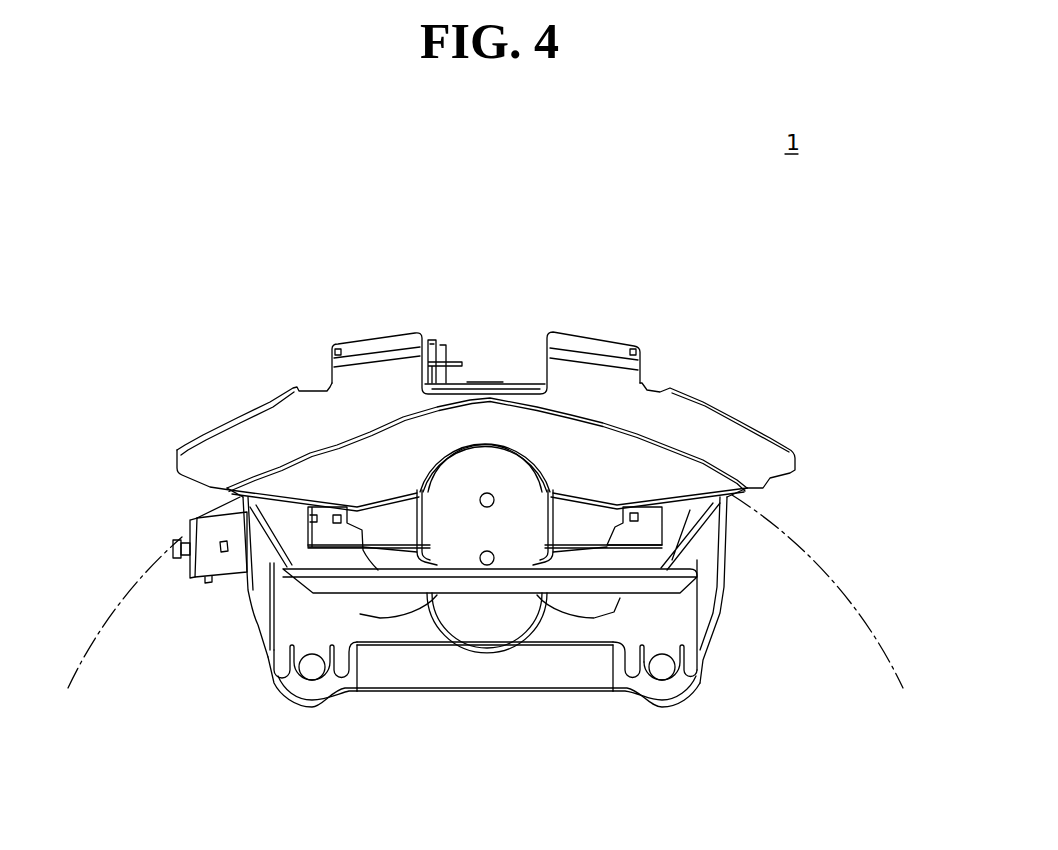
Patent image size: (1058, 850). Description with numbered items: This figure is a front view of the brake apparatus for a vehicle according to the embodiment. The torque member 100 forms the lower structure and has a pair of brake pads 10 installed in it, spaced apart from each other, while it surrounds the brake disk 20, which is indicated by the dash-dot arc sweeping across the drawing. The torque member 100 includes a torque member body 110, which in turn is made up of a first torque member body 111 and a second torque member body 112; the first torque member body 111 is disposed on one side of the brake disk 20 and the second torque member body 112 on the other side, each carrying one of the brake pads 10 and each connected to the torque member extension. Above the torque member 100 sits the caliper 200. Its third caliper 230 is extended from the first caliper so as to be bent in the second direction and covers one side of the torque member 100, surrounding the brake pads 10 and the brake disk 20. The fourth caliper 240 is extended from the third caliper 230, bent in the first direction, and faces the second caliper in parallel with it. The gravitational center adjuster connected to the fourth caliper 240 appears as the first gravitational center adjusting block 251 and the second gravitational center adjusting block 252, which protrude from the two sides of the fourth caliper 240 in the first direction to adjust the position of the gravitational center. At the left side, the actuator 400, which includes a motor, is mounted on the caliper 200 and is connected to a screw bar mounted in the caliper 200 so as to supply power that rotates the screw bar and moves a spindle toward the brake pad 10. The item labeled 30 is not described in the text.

The brake pads 10 is at (450, 537).
The brake disk 20 is at (847, 597).
The mounting bracket 30 is at (310, 547).
The torque member 100 is at (484, 711).
The torque member body 110 is at (484, 711).
The first torque member body 111 is at (608, 580).
The second torque member body 112 is at (668, 690).
The caliper 200 is at (479, 373).
The third caliper 230 is at (448, 378).
The fourth caliper 240 is at (500, 423).
The first gravitational center adjusting block 251 is at (223, 447).
The second gravitational center adjusting block 252 is at (700, 430).
The actuator 400 is at (212, 552).